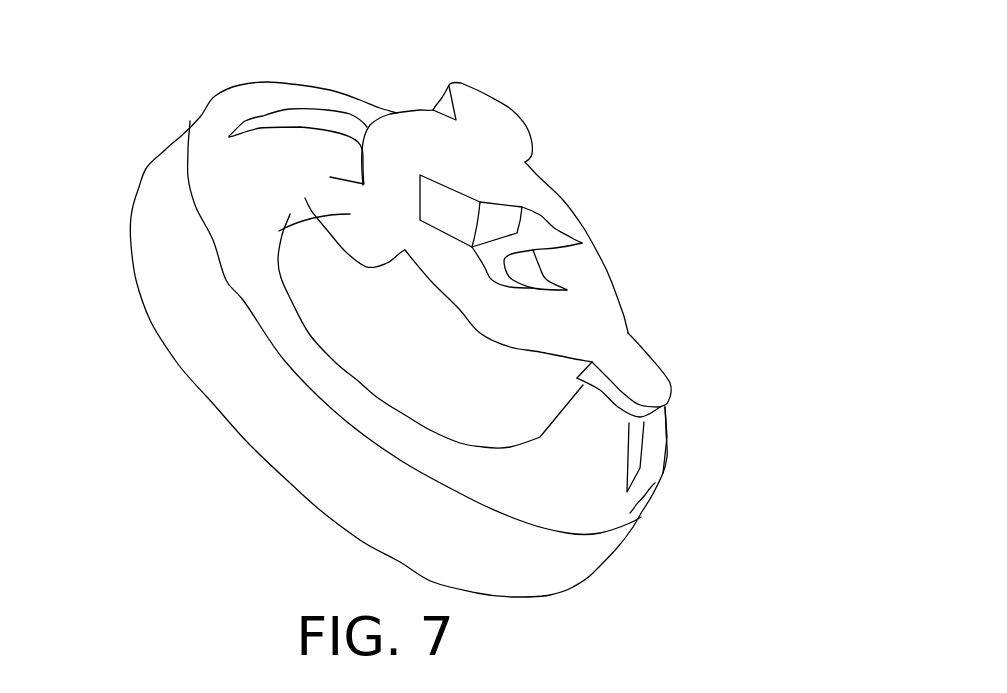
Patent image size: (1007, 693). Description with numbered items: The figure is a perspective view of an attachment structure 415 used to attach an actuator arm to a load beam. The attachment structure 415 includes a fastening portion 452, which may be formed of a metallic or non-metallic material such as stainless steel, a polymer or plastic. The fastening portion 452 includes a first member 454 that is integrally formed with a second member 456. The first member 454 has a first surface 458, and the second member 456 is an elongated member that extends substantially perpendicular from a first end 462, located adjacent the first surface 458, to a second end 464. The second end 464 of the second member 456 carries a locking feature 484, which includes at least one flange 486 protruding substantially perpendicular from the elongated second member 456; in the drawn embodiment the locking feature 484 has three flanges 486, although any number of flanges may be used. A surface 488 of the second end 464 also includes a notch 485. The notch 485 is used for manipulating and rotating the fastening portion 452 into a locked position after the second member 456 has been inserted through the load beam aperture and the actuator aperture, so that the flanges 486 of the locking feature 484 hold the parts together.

The attachment structure 415 is at (680, 126).
The fastening portion 452 is at (620, 548).
The first member 454 is at (681, 437).
The second member 456 is at (336, 343).
The first surface 458 is at (655, 483).
The first end 462 is at (510, 447).
The second end 464 is at (528, 187).
The locking feature 484 is at (653, 334).
The notch 485 is at (550, 233).
The flange 486 is at (362, 137).
The surface 488 is at (422, 140).